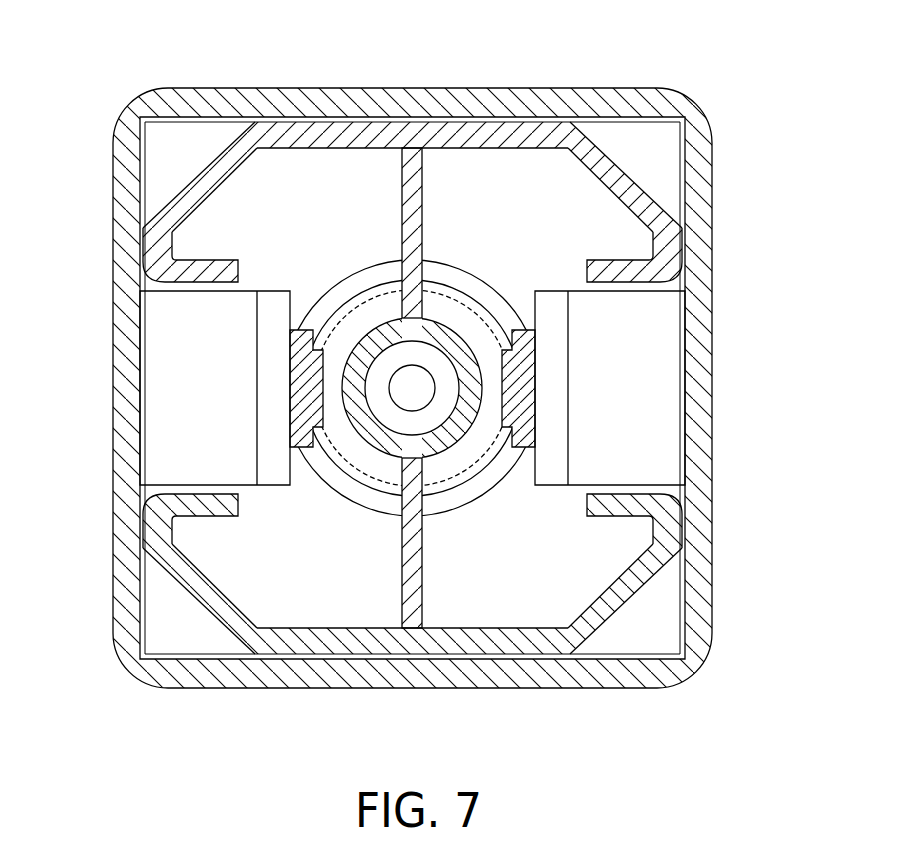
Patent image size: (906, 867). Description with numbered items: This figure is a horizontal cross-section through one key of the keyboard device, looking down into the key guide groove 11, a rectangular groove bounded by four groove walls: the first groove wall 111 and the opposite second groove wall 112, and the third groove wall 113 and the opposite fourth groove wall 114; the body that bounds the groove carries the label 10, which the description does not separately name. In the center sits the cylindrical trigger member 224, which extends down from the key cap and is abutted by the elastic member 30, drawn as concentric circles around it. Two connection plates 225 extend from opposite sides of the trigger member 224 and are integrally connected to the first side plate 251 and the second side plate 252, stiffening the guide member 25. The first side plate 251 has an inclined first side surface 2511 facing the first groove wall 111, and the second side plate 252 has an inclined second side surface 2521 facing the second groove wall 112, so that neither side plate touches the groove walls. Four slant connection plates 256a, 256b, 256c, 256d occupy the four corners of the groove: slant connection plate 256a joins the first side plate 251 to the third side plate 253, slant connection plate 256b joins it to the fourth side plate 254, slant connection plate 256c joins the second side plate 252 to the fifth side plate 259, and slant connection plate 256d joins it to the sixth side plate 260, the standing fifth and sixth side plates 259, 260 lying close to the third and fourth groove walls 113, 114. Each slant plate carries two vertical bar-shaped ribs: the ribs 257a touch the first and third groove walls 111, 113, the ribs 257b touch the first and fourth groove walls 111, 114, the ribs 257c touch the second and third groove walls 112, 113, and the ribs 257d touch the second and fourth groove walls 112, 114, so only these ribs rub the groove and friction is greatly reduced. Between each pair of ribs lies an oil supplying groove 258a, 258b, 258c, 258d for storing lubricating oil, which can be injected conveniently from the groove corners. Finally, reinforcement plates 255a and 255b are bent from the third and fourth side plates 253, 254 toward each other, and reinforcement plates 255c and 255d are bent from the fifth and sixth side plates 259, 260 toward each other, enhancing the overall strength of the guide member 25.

The housing 10 is at (712, 455).
The key guide groove 11 is at (652, 128).
The first groove wall 111 is at (402, 680).
The second groove wall 112 is at (298, 98).
The third groove wall 113 is at (700, 375).
The fourth groove wall 114 is at (125, 367).
The trigger member 224 is at (358, 388).
The connection plate 225 is at (411, 160).
The guide member 25 is at (647, 177).
The first side plate 251 is at (467, 680).
The first side surface 2511 is at (527, 680).
The second side plate 252 is at (360, 135).
The second side surface 2521 is at (455, 118).
The third side plate 253 is at (667, 531).
The fourth side plate 254 is at (150, 522).
The reinforcement plate 255a is at (617, 503).
The reinforcement plate 255b is at (200, 505).
The reinforcement plate 255c is at (622, 275).
The reinforcement plate 255d is at (200, 277).
The slant connection plate 256a is at (620, 620).
The slant connection plate 256b is at (197, 600).
The slant connection plate 256c is at (620, 160).
The slant connection plate 256d is at (212, 170).
The bar-shaped rib 257a is at (633, 585).
The bar-shaped rib 257b is at (145, 558).
The bar-shaped rib 257c is at (600, 150).
The bar-shaped rib 257d is at (250, 121).
The oil supplying groove 258a is at (650, 630).
The oil supplying groove 258b is at (155, 575).
The oil supplying groove 258c is at (628, 168).
The oil supplying groove 258d is at (177, 187).
The fifth side plate 259 is at (663, 242).
The sixth side plate 260 is at (167, 242).
The elastic member 30 is at (463, 298).